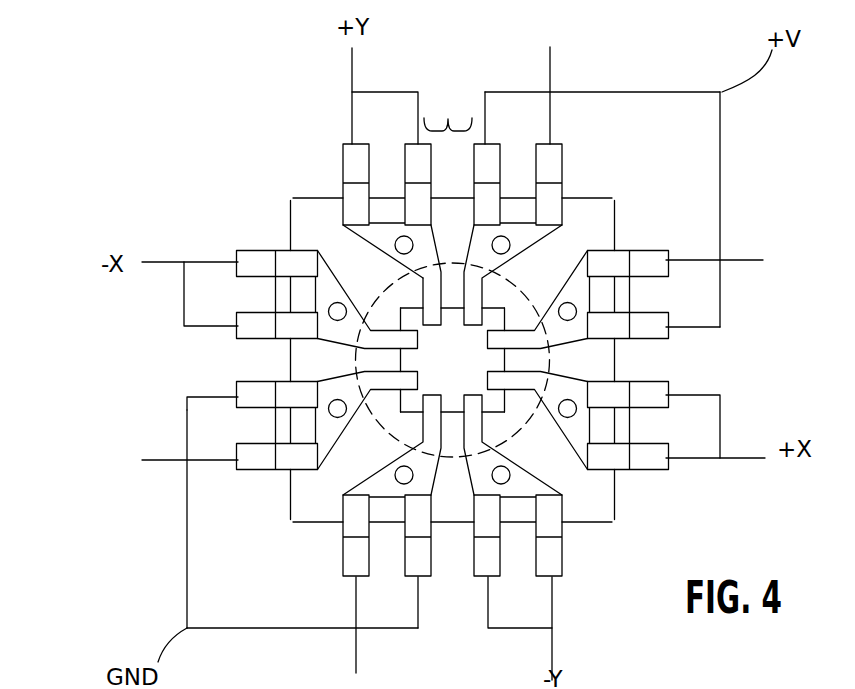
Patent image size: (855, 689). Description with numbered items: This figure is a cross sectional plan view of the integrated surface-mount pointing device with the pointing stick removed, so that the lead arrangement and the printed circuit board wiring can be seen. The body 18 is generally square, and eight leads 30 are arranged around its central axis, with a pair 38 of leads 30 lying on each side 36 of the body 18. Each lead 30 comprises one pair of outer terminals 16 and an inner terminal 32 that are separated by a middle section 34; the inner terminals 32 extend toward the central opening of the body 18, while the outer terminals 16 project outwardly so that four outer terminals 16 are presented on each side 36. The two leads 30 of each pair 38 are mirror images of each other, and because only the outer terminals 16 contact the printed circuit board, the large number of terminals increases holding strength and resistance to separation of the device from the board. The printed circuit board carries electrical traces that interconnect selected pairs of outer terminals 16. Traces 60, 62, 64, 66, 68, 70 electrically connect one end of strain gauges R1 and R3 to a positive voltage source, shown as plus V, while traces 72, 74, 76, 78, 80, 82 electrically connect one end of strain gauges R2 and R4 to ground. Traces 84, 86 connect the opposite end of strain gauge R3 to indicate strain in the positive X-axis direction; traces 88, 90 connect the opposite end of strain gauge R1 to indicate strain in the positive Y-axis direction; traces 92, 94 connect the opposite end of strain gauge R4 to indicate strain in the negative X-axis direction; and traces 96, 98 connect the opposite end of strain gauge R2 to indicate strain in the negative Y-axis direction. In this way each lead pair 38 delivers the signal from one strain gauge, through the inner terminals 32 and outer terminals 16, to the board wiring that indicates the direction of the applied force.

The outer terminals 16 is at (418, 164).
The body 18 is at (449, 325).
The lead 30 is at (342, 292).
The inner terminal 32 is at (471, 402).
The middle section 34 is at (370, 240).
The side 36 is at (614, 222).
The pair of leads 38 is at (482, 583).
The trace 60 is at (485, 108).
The trace 62 is at (552, 120).
The trace 64 is at (585, 92).
The trace 66 is at (700, 258).
The trace 68 is at (708, 327).
The trace 70 is at (721, 182).
The trace 72 is at (424, 615).
The trace 74 is at (356, 600).
The trace 76 is at (285, 628).
The trace 78 is at (187, 397).
The trace 80 is at (217, 462).
The trace 82 is at (183, 517).
The trace 84 is at (722, 408).
The trace 86 is at (700, 462).
The trace 88 is at (387, 92).
The trace 90 is at (352, 101).
The trace 92 is at (184, 290).
The trace 94 is at (192, 262).
The trace 96 is at (497, 628).
The trace 98 is at (553, 612).